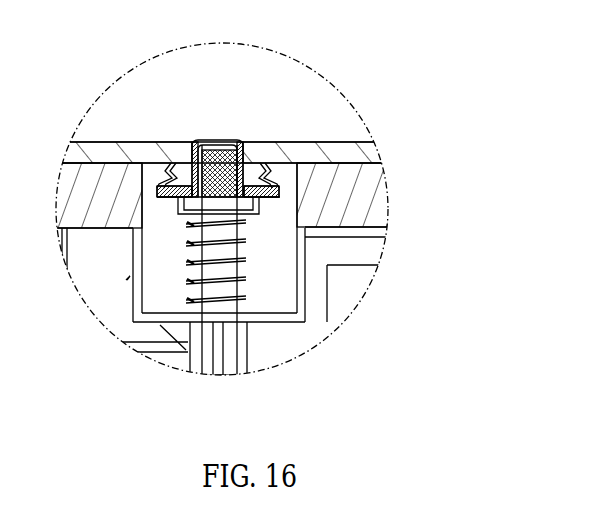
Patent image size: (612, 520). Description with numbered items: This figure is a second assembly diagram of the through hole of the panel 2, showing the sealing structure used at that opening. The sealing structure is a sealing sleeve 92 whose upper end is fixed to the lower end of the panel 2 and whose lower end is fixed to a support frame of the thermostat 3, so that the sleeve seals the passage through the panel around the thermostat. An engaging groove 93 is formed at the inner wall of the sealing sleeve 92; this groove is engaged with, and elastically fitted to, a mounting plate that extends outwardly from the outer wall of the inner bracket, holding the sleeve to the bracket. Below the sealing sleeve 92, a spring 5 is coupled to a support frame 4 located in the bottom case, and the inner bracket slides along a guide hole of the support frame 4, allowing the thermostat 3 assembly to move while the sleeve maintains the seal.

The panel 2 is at (337, 152).
The thermostat 3 is at (226, 165).
The sealing sleeve 92 is at (272, 163).
The engaging groove 93 is at (276, 194).
The spring 5 is at (193, 297).
The support frame 4 is at (277, 322).